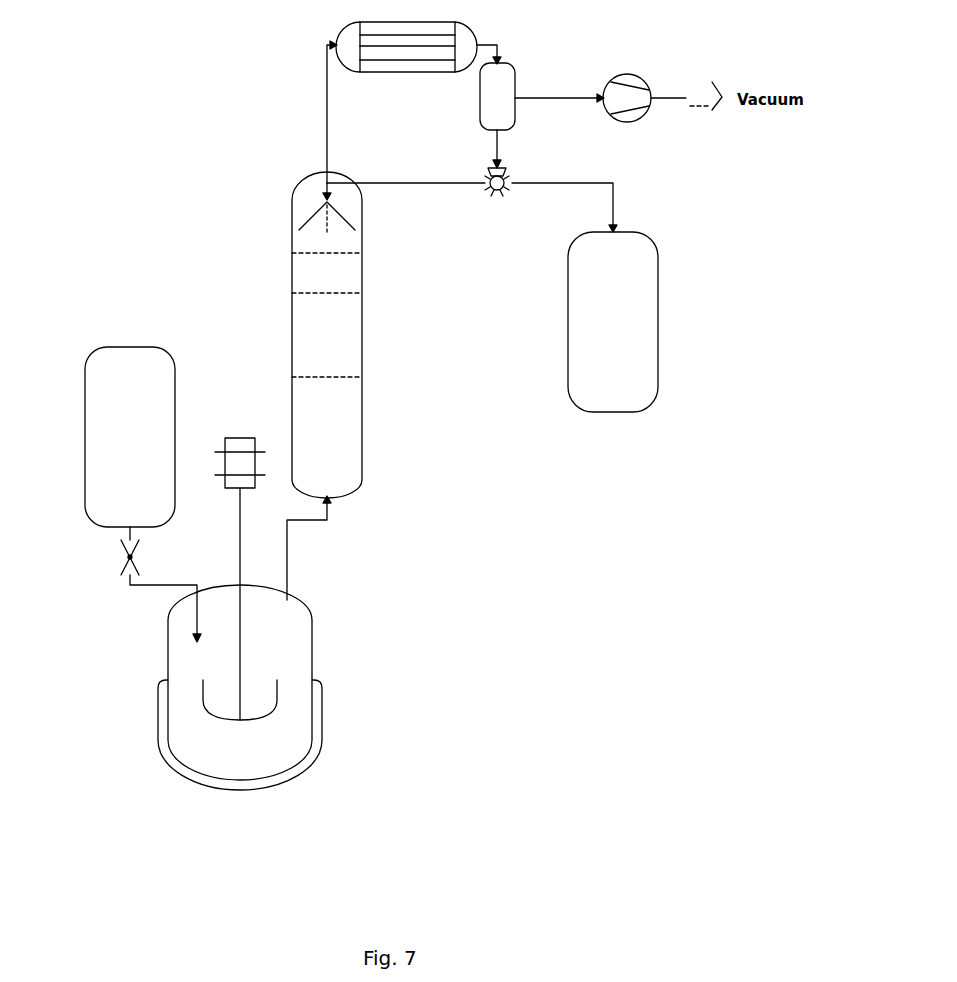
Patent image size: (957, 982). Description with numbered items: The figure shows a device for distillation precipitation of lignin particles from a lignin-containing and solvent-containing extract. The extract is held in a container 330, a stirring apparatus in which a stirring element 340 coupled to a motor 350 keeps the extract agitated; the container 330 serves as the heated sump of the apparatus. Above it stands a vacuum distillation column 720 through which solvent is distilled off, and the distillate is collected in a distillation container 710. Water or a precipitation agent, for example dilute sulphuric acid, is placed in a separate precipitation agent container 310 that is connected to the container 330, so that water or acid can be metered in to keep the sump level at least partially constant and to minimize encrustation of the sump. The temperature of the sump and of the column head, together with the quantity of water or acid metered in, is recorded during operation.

The precipitation agent container 310 is at (85, 452).
The container 330 is at (168, 670).
The stirring element 340 is at (240, 549).
The motor 350 is at (238, 445).
The distillation container 710 is at (658, 355).
The vacuum distillation column 720 is at (362, 371).